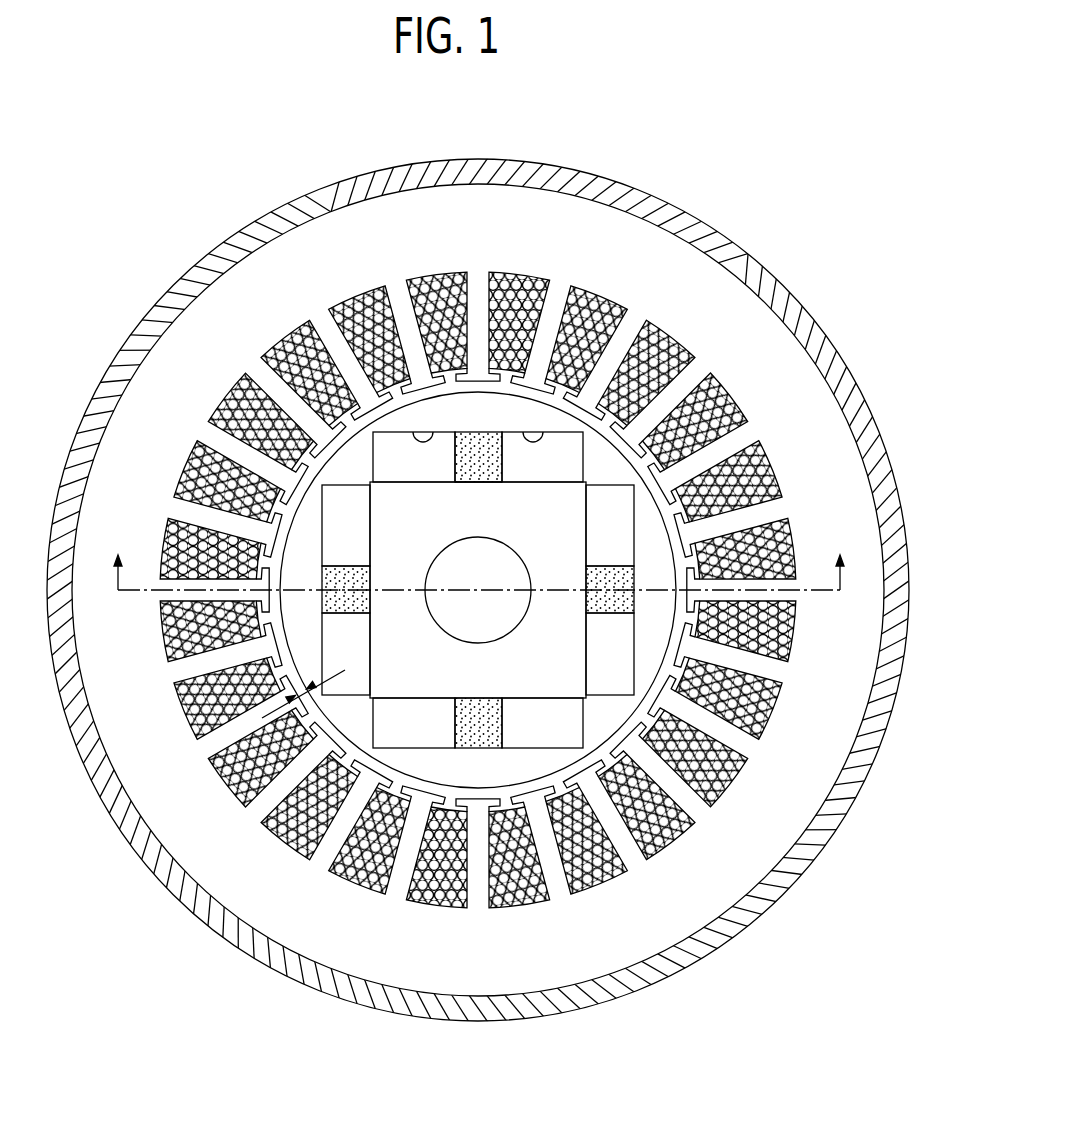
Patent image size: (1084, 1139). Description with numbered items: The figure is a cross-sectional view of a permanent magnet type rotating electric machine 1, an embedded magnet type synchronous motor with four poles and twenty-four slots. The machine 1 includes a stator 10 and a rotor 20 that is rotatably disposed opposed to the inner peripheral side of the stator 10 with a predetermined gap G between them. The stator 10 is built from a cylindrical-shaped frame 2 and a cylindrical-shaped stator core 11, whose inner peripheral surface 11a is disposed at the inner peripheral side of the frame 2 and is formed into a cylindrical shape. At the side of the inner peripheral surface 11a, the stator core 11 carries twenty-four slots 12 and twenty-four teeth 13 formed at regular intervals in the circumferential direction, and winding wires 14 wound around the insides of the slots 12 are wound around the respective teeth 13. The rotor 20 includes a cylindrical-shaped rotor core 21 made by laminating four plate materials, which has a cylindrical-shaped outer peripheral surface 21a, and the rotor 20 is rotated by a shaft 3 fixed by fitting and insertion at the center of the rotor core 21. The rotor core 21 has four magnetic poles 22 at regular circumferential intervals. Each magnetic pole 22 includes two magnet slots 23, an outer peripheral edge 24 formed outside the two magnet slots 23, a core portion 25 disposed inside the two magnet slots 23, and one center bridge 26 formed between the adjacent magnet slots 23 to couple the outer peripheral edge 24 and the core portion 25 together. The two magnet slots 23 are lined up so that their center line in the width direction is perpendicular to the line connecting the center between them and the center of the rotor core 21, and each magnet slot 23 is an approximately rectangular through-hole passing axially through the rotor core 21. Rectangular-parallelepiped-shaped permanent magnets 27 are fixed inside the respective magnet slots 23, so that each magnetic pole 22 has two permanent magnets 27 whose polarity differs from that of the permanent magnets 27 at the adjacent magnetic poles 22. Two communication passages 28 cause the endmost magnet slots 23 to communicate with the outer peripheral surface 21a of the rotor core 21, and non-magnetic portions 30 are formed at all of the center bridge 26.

The permanent magnet type rotating electric machine 1 is at (812, 185).
The frame 2 is at (443, 157).
The shaft 3 is at (447, 553).
The stator 10 is at (614, 250).
The stator core 11 is at (818, 440).
The inner peripheral surface 11a is at (675, 440).
The slots 12 is at (677, 847).
The teeth 13 is at (562, 895).
The winding wires 14 is at (353, 883).
The rotor 20 is at (507, 382).
The rotor core 21 is at (653, 634).
The outer peripheral surface 21a is at (657, 655).
The magnetic pole 22 is at (433, 430).
The magnet slots 23 is at (397, 450).
The outer peripheral edge 24 is at (480, 403).
The core portion 25 is at (480, 507).
The center bridge 26 is at (478, 457).
The permanent magnets 27 is at (368, 406).
The communication passages 28 is at (352, 458).
The non-magnetic portions 30 is at (465, 480).
The gap G is at (303, 681).